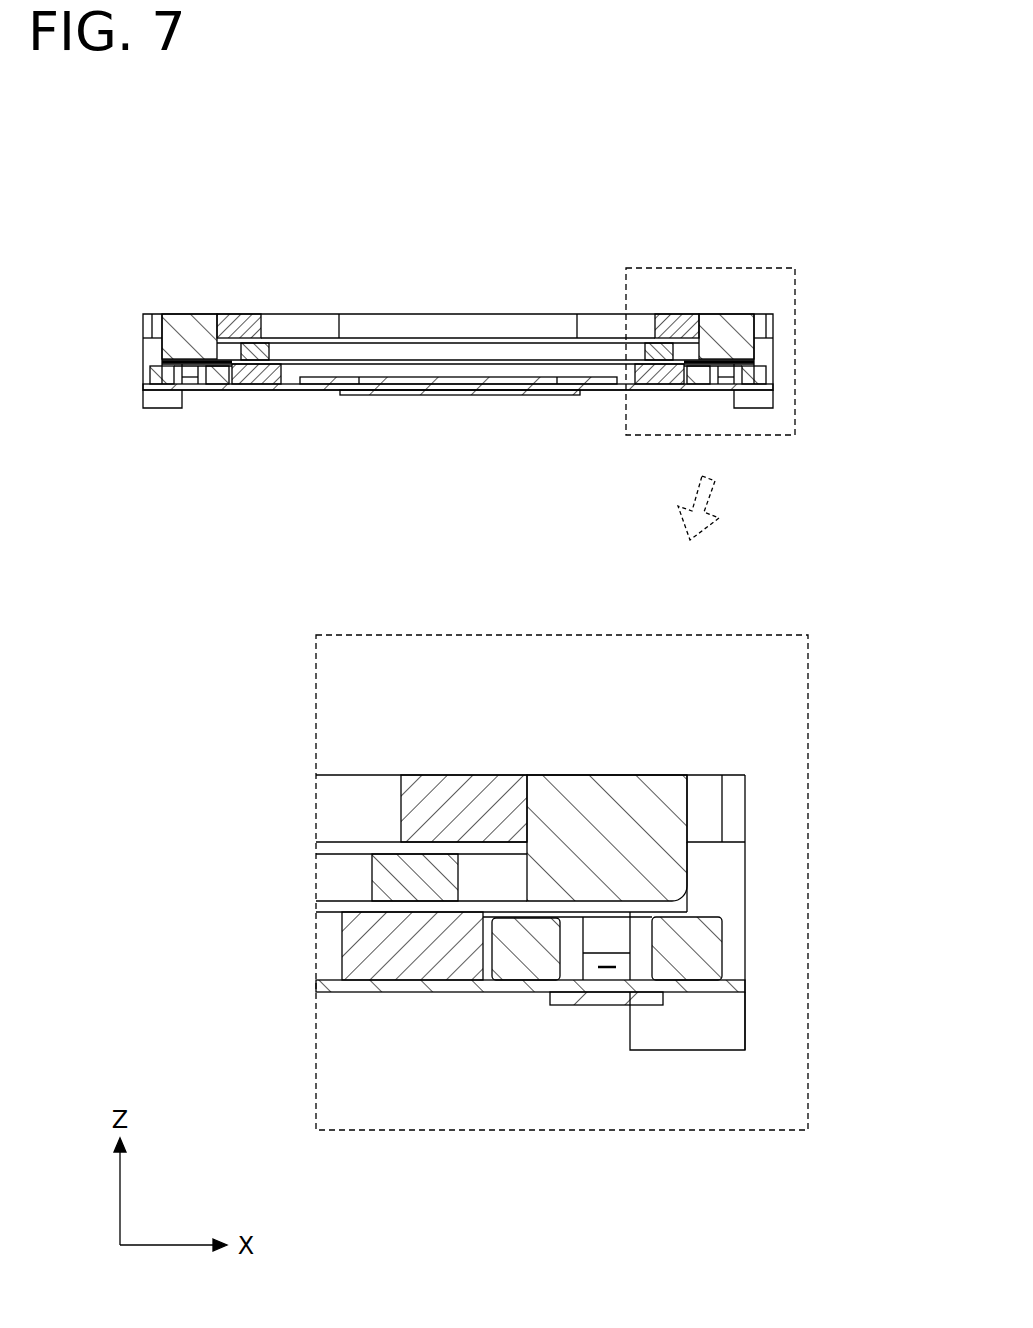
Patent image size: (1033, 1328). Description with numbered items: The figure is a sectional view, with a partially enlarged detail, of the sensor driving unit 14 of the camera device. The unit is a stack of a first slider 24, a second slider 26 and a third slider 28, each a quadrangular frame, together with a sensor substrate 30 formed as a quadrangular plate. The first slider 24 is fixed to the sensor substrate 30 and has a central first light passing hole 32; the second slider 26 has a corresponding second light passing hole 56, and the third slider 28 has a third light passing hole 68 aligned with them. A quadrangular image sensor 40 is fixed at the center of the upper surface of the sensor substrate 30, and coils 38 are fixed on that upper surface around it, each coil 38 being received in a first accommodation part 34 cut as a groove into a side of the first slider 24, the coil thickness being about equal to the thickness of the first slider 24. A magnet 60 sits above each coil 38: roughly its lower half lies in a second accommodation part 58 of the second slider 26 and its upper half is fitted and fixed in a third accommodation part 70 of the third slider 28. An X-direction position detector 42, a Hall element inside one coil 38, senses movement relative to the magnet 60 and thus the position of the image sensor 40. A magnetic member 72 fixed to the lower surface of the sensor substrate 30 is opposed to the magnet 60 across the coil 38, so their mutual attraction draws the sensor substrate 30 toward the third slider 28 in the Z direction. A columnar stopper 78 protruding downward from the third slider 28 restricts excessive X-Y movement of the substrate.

The sensor driving unit 14 is at (596, 210).
The first slider 24 is at (315, 368).
The second slider 26 is at (343, 348).
The third slider 28 is at (312, 325).
The sensor substrate 30 is at (596, 392).
The first light passing hole 32 is at (291, 370).
The first accommodation part 34 is at (500, 965).
The coil 38 is at (708, 952).
The image sensor 40 is at (430, 386).
The X-direction position detector 42 is at (613, 965).
The second light passing hole 56 is at (277, 343).
The second accommodation part 58 is at (445, 945).
The magnet 60 is at (607, 800).
The third light passing hole 68 is at (268, 324).
The third accommodation part 70 is at (529, 810).
The magnetic member 72 is at (502, 395).
The stopper 78 is at (698, 1033).